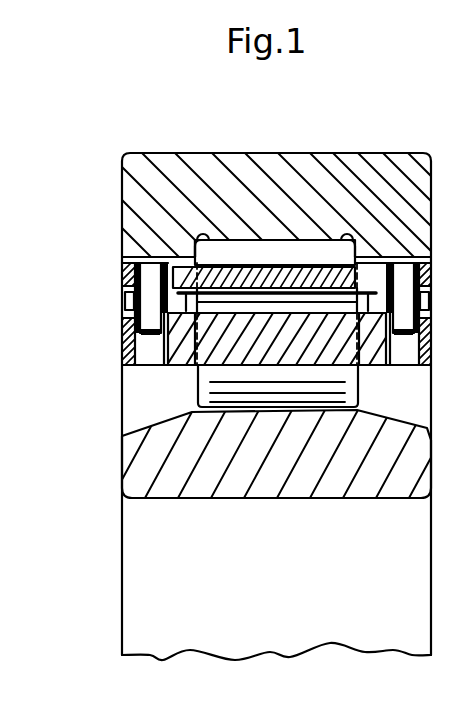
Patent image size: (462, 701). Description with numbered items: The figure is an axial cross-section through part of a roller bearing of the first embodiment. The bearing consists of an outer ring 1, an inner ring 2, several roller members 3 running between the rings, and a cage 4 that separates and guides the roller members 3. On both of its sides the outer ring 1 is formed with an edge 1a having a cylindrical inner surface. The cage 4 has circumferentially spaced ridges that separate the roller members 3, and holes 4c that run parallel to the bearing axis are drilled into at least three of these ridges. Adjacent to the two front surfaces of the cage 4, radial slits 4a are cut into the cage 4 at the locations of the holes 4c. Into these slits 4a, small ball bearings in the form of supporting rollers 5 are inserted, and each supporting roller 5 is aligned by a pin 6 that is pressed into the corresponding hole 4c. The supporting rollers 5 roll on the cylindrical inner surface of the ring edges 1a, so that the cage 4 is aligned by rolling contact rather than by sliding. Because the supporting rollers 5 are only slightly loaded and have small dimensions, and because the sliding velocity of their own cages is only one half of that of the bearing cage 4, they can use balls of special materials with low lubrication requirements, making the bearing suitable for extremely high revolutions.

The outer ring 1 is at (200, 198).
The edge 1a is at (183, 257).
The inner ring 2 is at (197, 458).
The roller member 3 is at (330, 252).
The cage 4 is at (250, 340).
The radial slit 4a is at (151, 352).
The hole 4c is at (288, 297).
The supporting roller 5 is at (150, 278).
The pin 6 is at (123, 310).